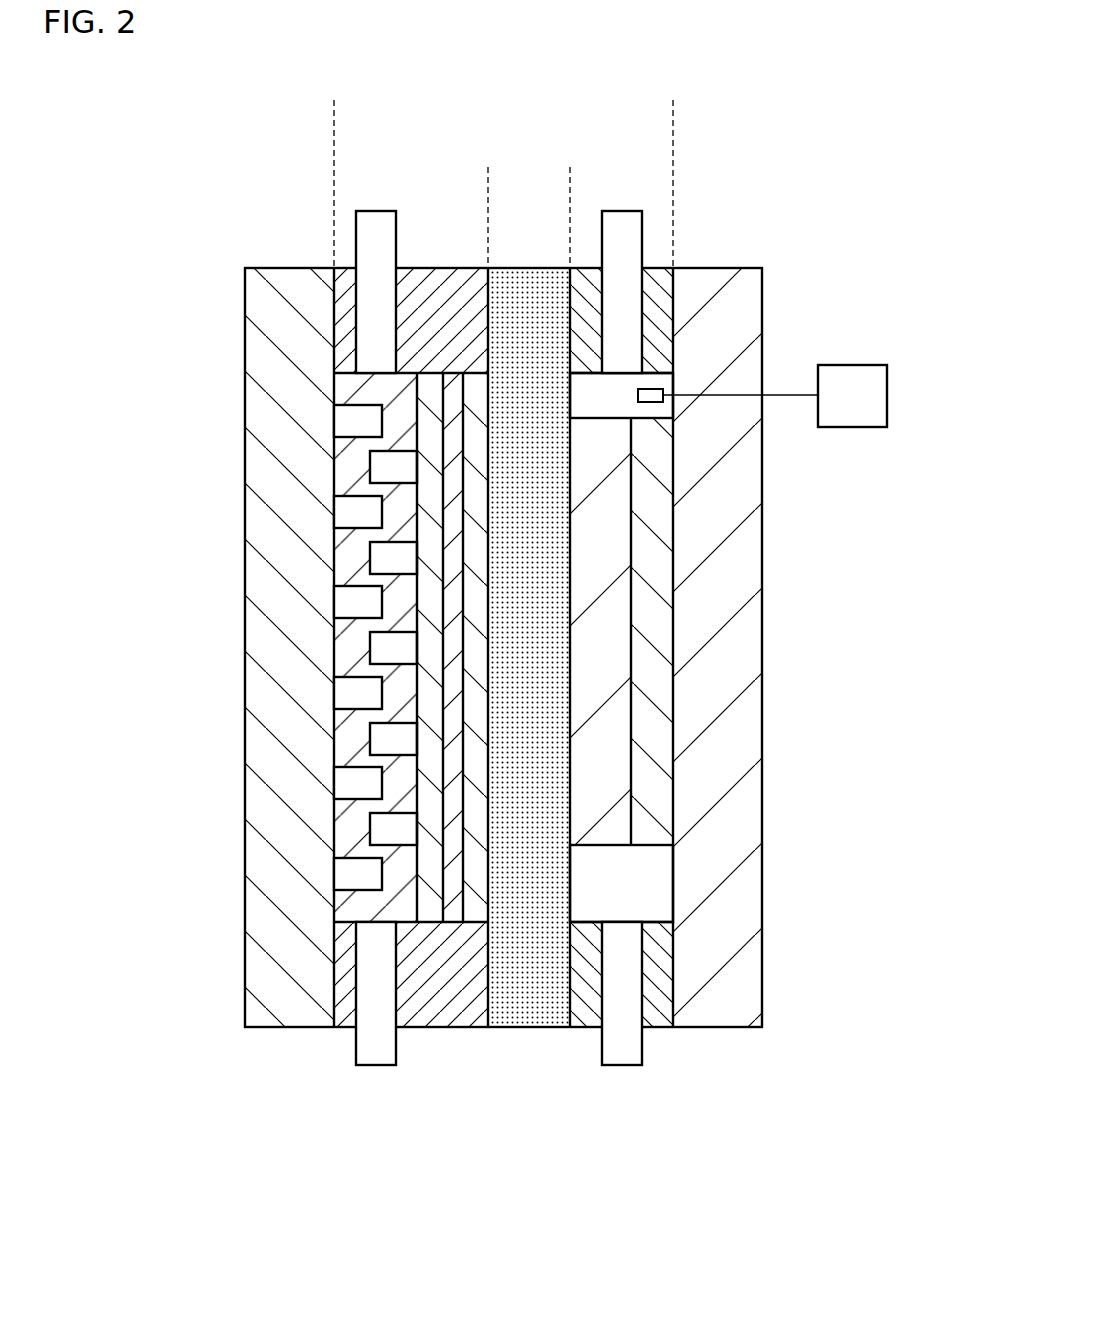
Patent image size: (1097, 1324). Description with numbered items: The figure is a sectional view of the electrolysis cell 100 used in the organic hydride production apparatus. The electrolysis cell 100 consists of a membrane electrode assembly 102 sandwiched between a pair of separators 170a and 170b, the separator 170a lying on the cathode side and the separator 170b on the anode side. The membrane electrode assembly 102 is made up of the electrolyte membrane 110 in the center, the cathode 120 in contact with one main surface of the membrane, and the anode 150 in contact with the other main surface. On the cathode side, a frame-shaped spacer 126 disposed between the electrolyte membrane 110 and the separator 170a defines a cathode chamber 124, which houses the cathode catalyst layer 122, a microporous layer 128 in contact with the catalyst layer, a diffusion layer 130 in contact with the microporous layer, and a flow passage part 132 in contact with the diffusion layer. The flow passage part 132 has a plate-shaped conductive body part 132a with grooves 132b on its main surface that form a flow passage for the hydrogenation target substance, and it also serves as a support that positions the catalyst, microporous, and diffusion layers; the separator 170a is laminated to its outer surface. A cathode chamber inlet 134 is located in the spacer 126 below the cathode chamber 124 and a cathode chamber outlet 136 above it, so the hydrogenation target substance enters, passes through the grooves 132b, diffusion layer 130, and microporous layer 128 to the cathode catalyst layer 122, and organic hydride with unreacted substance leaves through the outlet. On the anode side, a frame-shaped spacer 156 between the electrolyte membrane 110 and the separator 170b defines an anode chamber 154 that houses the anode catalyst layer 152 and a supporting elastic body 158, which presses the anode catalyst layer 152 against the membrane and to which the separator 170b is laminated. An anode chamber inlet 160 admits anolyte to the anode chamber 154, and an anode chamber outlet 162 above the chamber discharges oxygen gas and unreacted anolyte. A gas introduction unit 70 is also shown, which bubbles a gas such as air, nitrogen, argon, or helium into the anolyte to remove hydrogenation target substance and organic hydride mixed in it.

The gas introduction unit 70 is at (887, 402).
The electrolysis cell 100 is at (530, 1202).
The membrane electrode assembly 102 is at (673, 101).
The electrolyte membrane 110 is at (520, 268).
The cathode 120 is at (334, 168).
The cathode catalyst layer 122 is at (475, 398).
The cathode chamber 124 is at (334, 907).
The spacer 126 is at (462, 1027).
The microporous layer 128 is at (452, 423).
The diffusion layer 130 is at (430, 490).
The flow passage part 132 is at (244, 647).
The body part 132a is at (356, 547).
The grooves 132b is at (355, 612).
The cathode chamber inlet 134 is at (356, 1050).
The cathode chamber outlet 136 is at (356, 234).
The anode 150 is at (673, 168).
The anode catalyst layer 152 is at (603, 503).
The anode chamber 154 is at (675, 887).
The spacer 156 is at (659, 1027).
The supporting elastic body 158 is at (653, 573).
The anode chamber inlet 160 is at (602, 1050).
The anode chamber outlet 162 is at (642, 228).
The separator 170a is at (243, 802).
The separator 170b is at (762, 815).